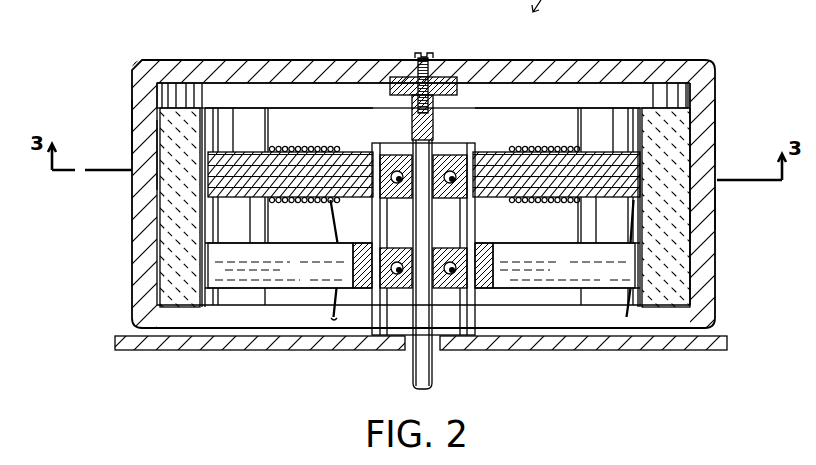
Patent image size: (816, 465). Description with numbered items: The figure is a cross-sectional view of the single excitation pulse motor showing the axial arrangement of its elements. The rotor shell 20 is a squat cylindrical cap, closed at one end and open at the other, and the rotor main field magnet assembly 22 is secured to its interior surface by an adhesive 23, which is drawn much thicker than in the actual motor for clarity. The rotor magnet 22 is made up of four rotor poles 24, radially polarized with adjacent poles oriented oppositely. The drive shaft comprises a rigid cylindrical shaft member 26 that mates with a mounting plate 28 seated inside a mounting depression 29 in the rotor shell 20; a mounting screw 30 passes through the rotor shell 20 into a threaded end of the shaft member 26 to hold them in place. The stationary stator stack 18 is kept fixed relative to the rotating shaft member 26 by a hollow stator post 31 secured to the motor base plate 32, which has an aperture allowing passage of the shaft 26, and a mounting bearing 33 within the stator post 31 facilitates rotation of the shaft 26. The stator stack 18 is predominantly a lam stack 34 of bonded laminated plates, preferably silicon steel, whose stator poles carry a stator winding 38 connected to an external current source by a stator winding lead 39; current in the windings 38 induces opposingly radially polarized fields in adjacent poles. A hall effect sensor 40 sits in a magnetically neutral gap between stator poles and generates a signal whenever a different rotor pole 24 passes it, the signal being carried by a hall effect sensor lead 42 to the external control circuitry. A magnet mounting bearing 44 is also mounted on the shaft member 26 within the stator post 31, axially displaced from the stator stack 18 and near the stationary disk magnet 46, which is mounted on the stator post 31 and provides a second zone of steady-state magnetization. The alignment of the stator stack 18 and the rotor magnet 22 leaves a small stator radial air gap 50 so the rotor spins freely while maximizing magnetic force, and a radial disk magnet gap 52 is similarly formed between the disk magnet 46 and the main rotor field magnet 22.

The stator stack 18 is at (617, 135).
The rotor shell 20 is at (293, 83).
The rotor main field magnet assembly 22 is at (132, 158).
The adhesive 23 is at (132, 127).
The rotor poles 24 is at (235, 117).
The shaft member 26 is at (438, 358).
The mounting plate 28 is at (453, 60).
The mounting depression 29 is at (403, 77).
The mounting screw 30 is at (430, 55).
The stator post 31 is at (365, 233).
The motor base plate 32 is at (677, 353).
The mounting bearing 33 is at (388, 145).
The lam stack 34 is at (245, 157).
The stator winding 38 is at (337, 141).
The stator winding lead 39 is at (332, 308).
The hall effect sensor 40 is at (718, 208).
The hall effect sensor lead 42 is at (717, 218).
The magnet mounting bearing 44 is at (399, 290).
The stationary disk magnet 46 is at (283, 268).
The stator radial air gap 50 is at (135, 208).
The radial disk magnet gap 52 is at (132, 263).